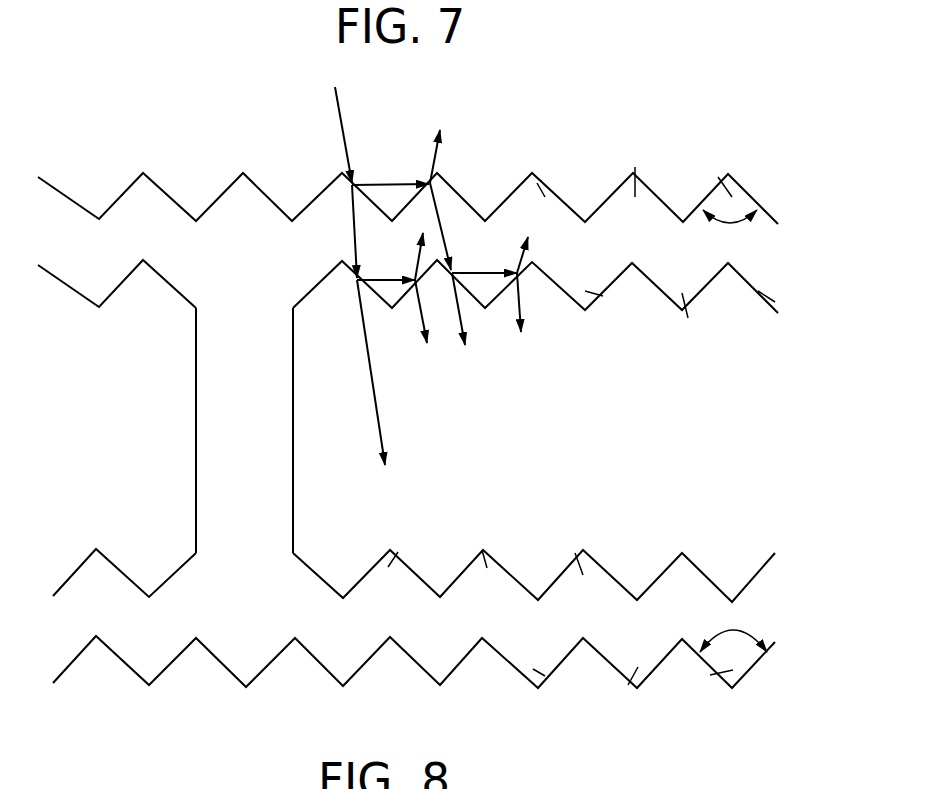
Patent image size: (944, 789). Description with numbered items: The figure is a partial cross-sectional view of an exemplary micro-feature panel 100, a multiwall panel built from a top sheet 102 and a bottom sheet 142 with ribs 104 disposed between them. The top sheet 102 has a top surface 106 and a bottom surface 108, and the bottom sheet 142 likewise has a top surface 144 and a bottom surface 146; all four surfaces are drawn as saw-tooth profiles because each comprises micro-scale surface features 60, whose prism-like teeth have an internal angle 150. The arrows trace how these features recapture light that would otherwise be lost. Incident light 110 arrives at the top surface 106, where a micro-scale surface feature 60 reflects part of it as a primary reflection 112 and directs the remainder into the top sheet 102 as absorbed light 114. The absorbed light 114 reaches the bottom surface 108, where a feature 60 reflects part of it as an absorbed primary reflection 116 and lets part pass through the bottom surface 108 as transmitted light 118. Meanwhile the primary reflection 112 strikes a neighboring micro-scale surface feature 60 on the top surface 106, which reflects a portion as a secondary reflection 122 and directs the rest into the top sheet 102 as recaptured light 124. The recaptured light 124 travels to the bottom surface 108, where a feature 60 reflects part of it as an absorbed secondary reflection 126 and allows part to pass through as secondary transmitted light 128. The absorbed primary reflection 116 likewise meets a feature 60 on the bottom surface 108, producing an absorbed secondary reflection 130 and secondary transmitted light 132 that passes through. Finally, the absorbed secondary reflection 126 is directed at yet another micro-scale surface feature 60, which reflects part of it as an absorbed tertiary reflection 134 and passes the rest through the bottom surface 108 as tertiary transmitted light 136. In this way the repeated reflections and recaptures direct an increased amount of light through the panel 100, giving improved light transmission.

The micro-scale surface feature 60 is at (540, 188).
The micro-feature panel 100 is at (462, 120).
The top sheet 102 is at (701, 260).
The ribs 104 is at (264, 436).
The top surface 106 is at (668, 118).
The bottom surface 108 is at (610, 372).
The incident light 110 is at (340, 110).
The primary reflection 112 is at (383, 182).
The absorbed light 114 is at (352, 232).
The absorbed primary reflection 116 is at (375, 277).
The transmitted light 118 is at (377, 405).
The secondary reflection 122 is at (432, 162).
The recaptured light 124 is at (437, 210).
The absorbed secondary reflection 126 is at (462, 270).
The secondary transmitted light 128 is at (459, 315).
The absorbed secondary reflection 130 is at (406, 262).
The secondary transmitted light 132 is at (418, 297).
The absorbed tertiary reflection 134 is at (538, 263).
The tertiary transmitted light 136 is at (523, 292).
The bottom sheet 142 is at (655, 640).
The top surface 144 is at (622, 540).
The bottom surface 146 is at (700, 714).
The internal angle 150 is at (733, 431).